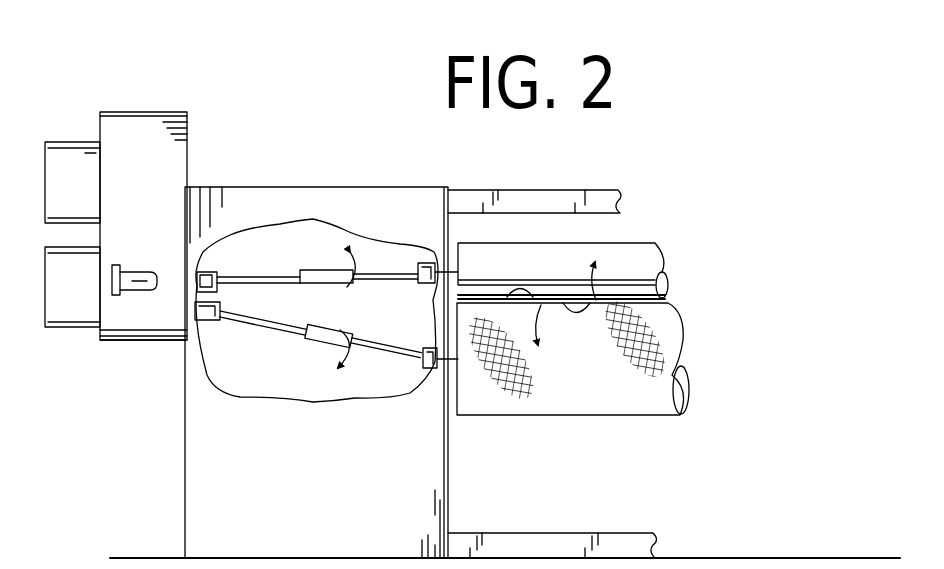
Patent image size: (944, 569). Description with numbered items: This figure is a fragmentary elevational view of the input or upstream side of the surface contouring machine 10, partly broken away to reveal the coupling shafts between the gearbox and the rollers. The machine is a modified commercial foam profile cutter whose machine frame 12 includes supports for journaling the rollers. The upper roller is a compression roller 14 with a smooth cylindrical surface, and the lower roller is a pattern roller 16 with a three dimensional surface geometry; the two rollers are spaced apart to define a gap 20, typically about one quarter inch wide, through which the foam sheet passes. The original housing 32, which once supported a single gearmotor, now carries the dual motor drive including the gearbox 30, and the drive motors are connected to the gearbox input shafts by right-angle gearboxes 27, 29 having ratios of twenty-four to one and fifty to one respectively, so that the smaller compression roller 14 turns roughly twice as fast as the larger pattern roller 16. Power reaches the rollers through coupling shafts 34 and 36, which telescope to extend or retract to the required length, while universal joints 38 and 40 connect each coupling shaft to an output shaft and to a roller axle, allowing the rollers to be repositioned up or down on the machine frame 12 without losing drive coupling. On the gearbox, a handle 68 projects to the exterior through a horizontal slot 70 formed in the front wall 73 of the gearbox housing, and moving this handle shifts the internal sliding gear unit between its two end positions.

The surface contouring machine 10 is at (710, 276).
The machine frame 12 is at (555, 193).
The compression roller 14 is at (657, 250).
The pattern roller 16 is at (660, 375).
The gap 20 is at (673, 298).
The upper right-angle gearbox 27 is at (72, 148).
The lower right-angle gearbox 29 is at (62, 313).
The gearbox 30 is at (170, 157).
The housing 32 is at (372, 203).
The coupling shaft 34 is at (313, 270).
The coupling shaft 36 is at (313, 342).
The universal joint 38 is at (243, 237).
The universal joint 40 is at (428, 262).
The handle 68 is at (110, 268).
The horizontal slot 70 is at (147, 293).
The front wall 73 is at (118, 341).